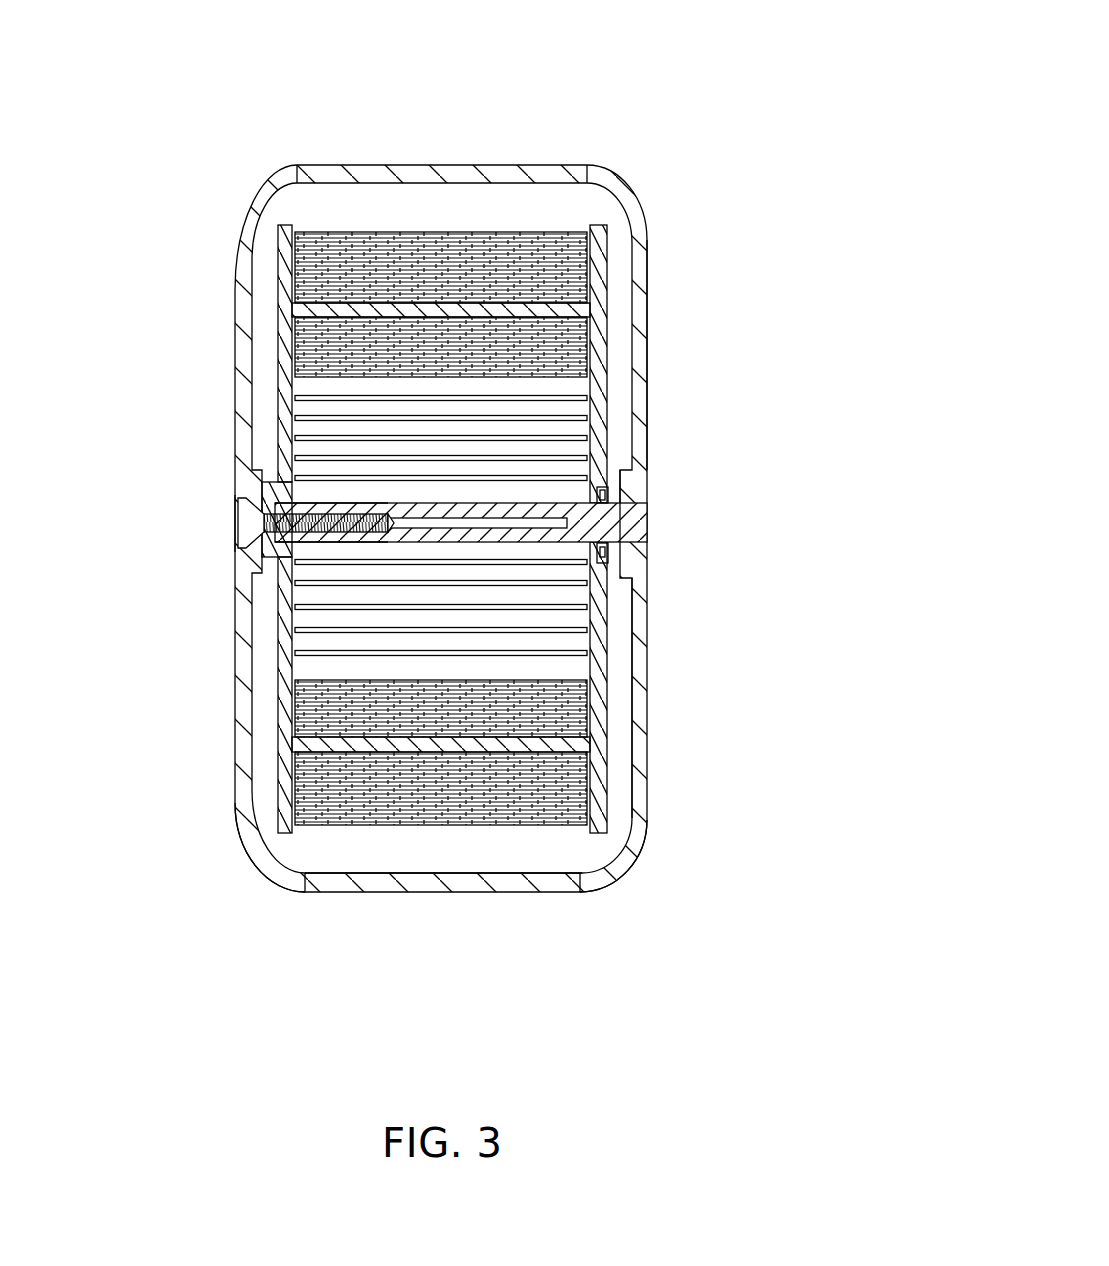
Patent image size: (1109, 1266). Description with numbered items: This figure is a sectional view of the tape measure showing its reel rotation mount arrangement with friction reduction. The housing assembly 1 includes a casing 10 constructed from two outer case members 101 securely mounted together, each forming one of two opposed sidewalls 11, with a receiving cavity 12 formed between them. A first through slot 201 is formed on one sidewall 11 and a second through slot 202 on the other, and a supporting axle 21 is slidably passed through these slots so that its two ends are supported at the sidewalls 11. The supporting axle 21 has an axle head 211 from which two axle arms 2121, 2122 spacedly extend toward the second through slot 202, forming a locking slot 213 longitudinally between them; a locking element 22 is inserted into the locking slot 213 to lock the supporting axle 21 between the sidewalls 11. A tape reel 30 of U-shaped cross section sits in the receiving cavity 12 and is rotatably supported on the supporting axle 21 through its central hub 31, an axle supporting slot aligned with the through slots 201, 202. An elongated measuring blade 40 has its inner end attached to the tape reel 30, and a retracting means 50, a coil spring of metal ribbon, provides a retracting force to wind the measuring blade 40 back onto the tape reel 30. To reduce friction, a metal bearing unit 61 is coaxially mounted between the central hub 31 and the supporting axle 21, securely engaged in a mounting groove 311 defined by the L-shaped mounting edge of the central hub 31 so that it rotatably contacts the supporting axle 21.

The housing assembly 1 is at (775, 1068).
The casing 10 is at (463, 609).
The outer case member 101 is at (655, 773).
The sidewall 11 is at (638, 292).
The receiving cavity 12 is at (462, 848).
The first through slot 201 is at (655, 555).
The second through slot 202 is at (230, 520).
The supporting axle 21 is at (507, 561).
The axle head 211 is at (635, 527).
The axle arm 2121 is at (323, 533).
The axle arm 2122 is at (290, 505).
The locking slot 213 is at (415, 523).
The locking element 22 is at (278, 525).
The tape reel 30 is at (551, 478).
The central hub 31 is at (622, 568).
The mounting groove 311 is at (603, 485).
The measuring blade 40 is at (470, 248).
The retracting means 50 is at (530, 657).
The bearing unit 61 is at (608, 497).